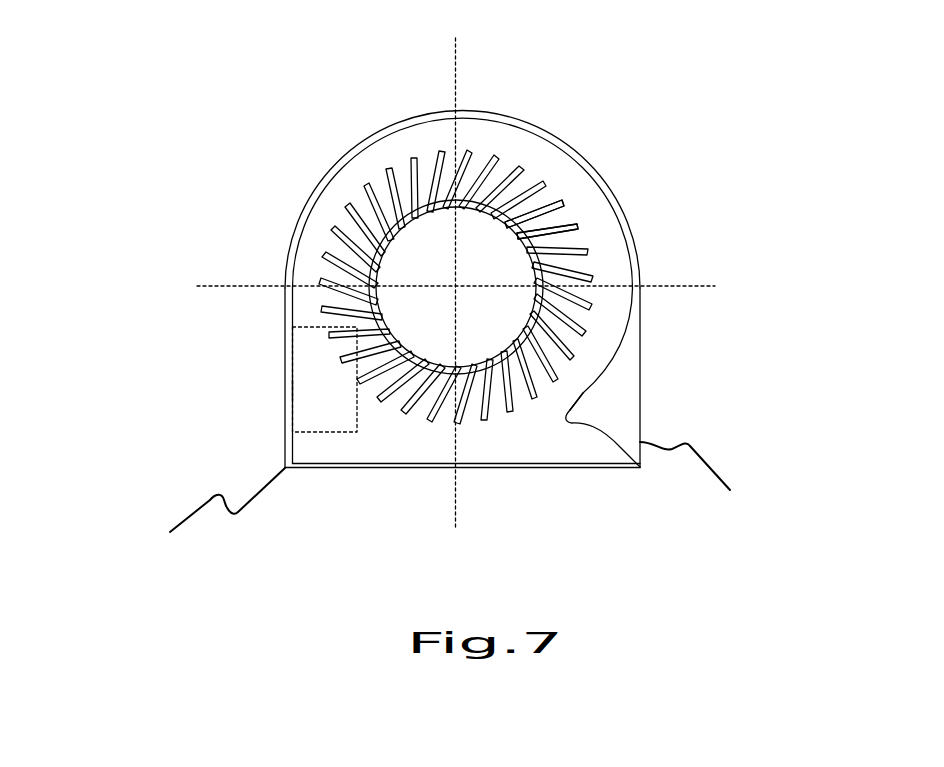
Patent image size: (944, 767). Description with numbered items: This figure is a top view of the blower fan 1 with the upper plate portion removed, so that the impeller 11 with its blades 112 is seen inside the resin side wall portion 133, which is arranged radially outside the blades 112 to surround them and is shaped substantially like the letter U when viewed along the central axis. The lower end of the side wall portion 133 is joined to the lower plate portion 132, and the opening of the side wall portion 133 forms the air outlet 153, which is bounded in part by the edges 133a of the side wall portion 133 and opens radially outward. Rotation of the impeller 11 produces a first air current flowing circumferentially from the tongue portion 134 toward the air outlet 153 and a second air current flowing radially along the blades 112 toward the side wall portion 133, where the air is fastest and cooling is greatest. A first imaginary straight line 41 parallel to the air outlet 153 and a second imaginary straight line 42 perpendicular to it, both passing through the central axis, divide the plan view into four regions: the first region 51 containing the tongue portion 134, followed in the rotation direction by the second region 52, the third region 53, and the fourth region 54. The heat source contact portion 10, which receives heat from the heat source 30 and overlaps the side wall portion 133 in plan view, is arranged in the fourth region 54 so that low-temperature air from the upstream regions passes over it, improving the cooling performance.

The blower fan 1 is at (440, 298).
The heat source contact portion 10 is at (320, 343).
The impeller 11 is at (422, 252).
The heat source 30 is at (303, 388).
The first imaginary straight line 41 is at (658, 285).
The second imaginary straight line 42 is at (450, 78).
The first region 51 is at (607, 342).
The second region 52 is at (555, 177).
The third region 53 is at (335, 205).
The fourth region 54 is at (337, 415).
The blades 112 is at (577, 228).
The lower plate portion 132 is at (318, 263).
The side wall portion 133 is at (360, 146).
The edge of the side wall portion 133a is at (459, 502).
The tongue portion 134 is at (612, 403).
The air outlet 153 is at (368, 462).